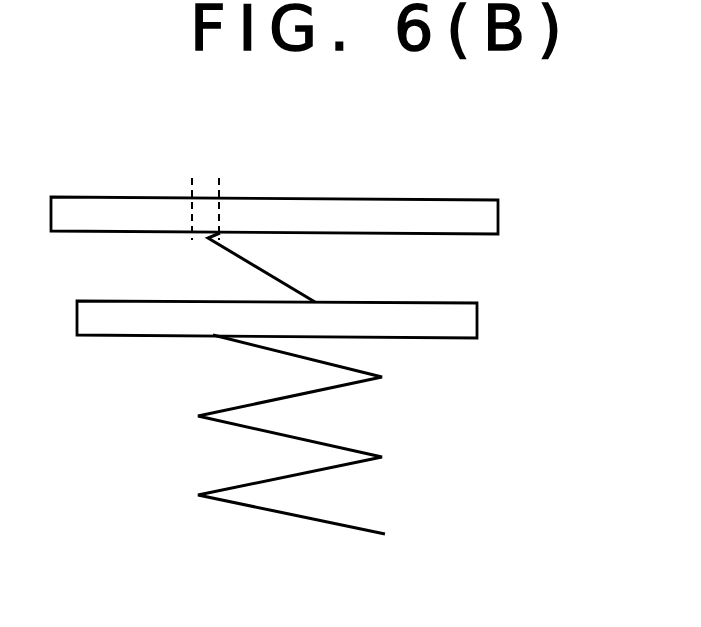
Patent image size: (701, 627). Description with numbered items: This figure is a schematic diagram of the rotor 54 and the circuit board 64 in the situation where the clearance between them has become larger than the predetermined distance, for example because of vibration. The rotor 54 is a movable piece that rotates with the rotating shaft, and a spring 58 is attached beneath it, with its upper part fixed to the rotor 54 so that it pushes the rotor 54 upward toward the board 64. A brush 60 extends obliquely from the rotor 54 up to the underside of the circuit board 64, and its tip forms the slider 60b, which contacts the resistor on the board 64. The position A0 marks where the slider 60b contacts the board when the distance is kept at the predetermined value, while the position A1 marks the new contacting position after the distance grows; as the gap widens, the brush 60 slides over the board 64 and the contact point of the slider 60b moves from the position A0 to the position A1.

The circuit board 64 is at (430, 200).
The position A0 is at (171, 189).
The position A1 is at (231, 189).
The brush 60 is at (262, 268).
The slider 60b is at (228, 239).
The rotor 54 is at (477, 318).
The spring 58 is at (348, 527).